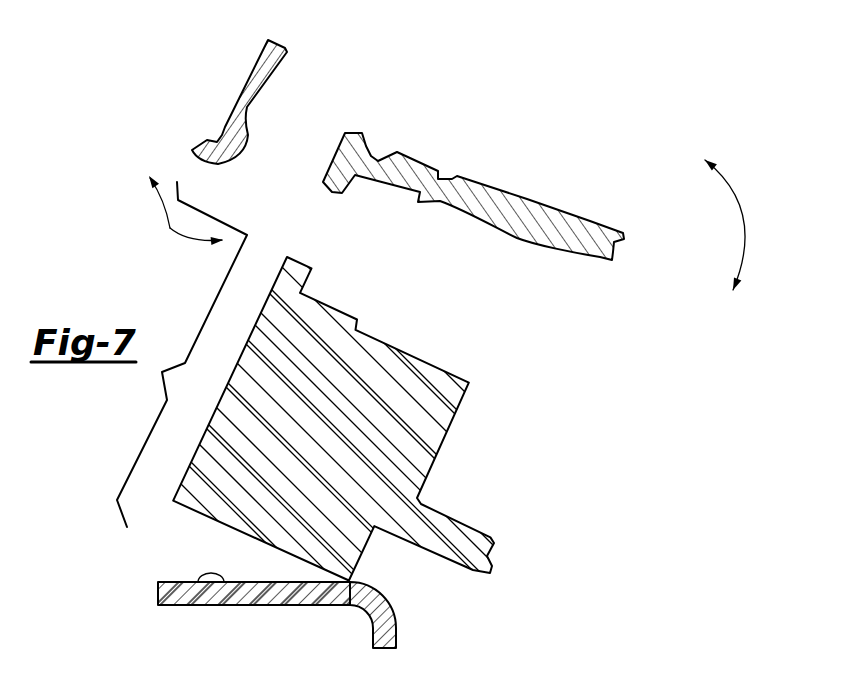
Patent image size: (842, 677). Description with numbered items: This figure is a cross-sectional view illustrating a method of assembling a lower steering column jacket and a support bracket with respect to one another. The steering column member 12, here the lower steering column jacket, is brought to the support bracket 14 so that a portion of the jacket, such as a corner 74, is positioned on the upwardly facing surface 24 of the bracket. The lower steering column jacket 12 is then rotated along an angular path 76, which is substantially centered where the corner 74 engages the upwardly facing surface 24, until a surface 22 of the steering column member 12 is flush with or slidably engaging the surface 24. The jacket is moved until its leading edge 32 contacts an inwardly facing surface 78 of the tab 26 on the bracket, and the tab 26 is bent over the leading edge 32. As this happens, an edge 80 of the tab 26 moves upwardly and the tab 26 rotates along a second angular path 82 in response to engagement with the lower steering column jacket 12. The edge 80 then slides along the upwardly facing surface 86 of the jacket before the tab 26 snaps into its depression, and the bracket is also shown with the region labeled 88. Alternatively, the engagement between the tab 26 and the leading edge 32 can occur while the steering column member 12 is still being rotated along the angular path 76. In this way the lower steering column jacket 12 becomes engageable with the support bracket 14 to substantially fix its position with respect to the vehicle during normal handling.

The steering column member 12 is at (516, 181).
The support bracket 14 is at (385, 637).
The surface 22 is at (215, 519).
The upwardly facing surface 24 is at (198, 580).
The tab 26 is at (205, 107).
The leading edge 32 is at (342, 138).
The corner 74 is at (350, 580).
The angular path 76 is at (745, 217).
The inwardly facing surface 78 is at (272, 80).
The edge 80 is at (238, 160).
The angular path 82 is at (170, 228).
The upwardly facing surface 86 is at (783, 676).
The flange 88 is at (562, 670).